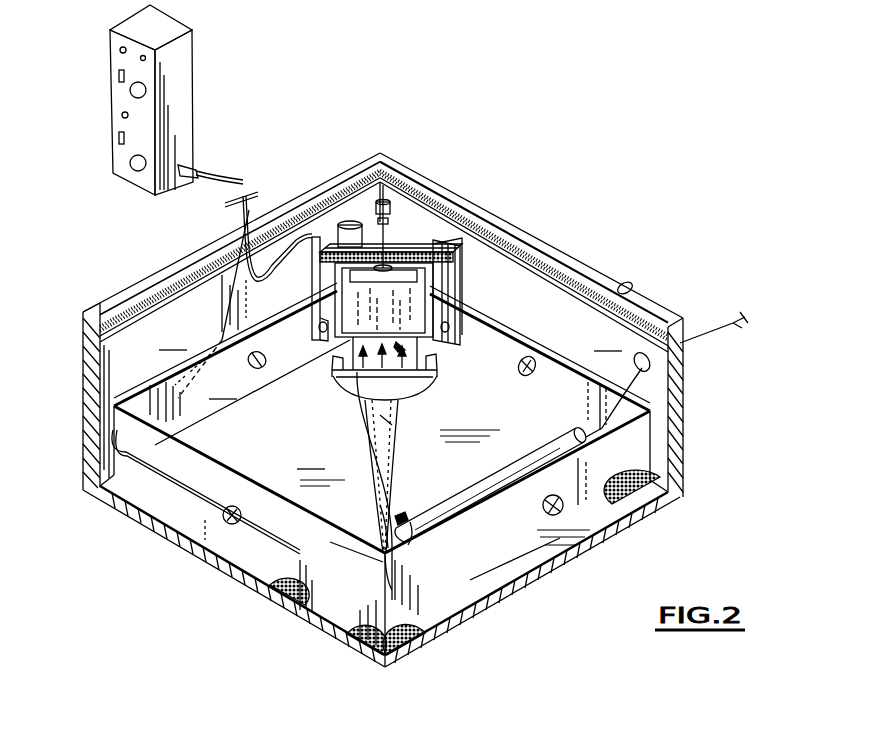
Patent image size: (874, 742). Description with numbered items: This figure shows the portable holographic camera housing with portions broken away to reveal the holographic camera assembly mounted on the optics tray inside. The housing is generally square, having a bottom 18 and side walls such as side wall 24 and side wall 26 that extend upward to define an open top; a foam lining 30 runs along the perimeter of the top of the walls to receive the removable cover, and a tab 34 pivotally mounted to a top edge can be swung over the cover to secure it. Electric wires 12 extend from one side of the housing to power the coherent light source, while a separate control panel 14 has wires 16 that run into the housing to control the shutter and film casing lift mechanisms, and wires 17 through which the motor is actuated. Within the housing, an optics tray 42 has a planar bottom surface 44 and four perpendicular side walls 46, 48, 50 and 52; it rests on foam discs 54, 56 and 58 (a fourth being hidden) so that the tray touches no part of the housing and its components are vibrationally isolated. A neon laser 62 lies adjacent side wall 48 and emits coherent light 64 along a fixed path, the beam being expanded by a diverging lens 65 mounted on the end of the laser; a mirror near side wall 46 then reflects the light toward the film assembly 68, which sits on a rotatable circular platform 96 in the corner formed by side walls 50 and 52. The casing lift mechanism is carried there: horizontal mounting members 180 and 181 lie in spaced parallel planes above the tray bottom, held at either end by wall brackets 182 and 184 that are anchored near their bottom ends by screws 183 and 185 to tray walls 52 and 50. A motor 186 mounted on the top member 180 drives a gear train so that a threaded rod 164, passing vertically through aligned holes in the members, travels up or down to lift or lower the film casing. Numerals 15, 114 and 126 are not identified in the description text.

The electric wires 12 is at (733, 322).
The control panel 14 is at (177, 32).
The base pad 15 is at (300, 574).
The wires 16 is at (212, 176).
The wires 17 is at (299, 188).
The bottom 18 is at (484, 600).
The side wall 24 is at (531, 325).
The side wall 26 is at (231, 321).
The foam lining 30 is at (168, 288).
The tab 34 is at (625, 285).
The optics tray 42 is at (148, 445).
The planar bottom surface 44 is at (382, 422).
The side wall 46 is at (206, 520).
The side wall 48 is at (526, 539).
The side wall 50 is at (520, 350).
The side wall 52 is at (206, 375).
The foam disc 54 is at (135, 518).
The foam disc 56 is at (400, 652).
The foam disc 58 is at (655, 498).
The neon laser 62 is at (468, 498).
The coherent light 64 is at (404, 417).
The diverging lens 65 is at (393, 538).
The film assembly 68 is at (416, 359).
The circular platform 96 is at (360, 396).
The reflector 114 is at (420, 375).
The lamp housing 126 is at (413, 307).
The threaded rod 164 is at (422, 243).
The horizontal mounting member 180 is at (450, 237).
The horizontal mounting member 181 is at (311, 296).
The wall bracket 182 is at (318, 326).
The screw 183 is at (325, 342).
The wall bracket 184 is at (458, 280).
The screw 185 is at (385, 232).
The motor 186 is at (352, 219).